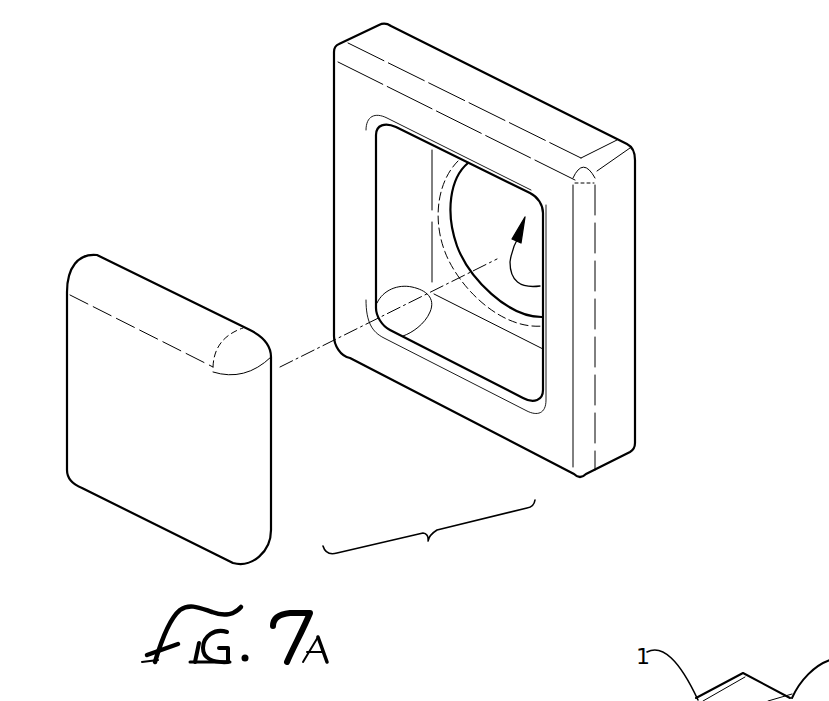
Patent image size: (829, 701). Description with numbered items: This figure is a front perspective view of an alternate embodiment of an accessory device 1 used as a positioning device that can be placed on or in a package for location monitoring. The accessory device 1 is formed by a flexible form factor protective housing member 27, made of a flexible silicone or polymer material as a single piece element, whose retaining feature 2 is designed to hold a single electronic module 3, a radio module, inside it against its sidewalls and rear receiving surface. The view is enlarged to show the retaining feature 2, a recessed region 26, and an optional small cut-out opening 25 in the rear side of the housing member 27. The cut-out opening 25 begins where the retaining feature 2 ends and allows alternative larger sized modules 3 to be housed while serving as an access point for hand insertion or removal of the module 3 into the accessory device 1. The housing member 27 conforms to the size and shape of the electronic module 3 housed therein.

The accessory device 1 is at (450, 75).
The retaining feature 2 is at (486, 378).
The electronic module 3 is at (144, 477).
The cut-out opening 25 is at (540, 286).
The recessed region 26 is at (397, 180).
The housing member 27 is at (615, 213).